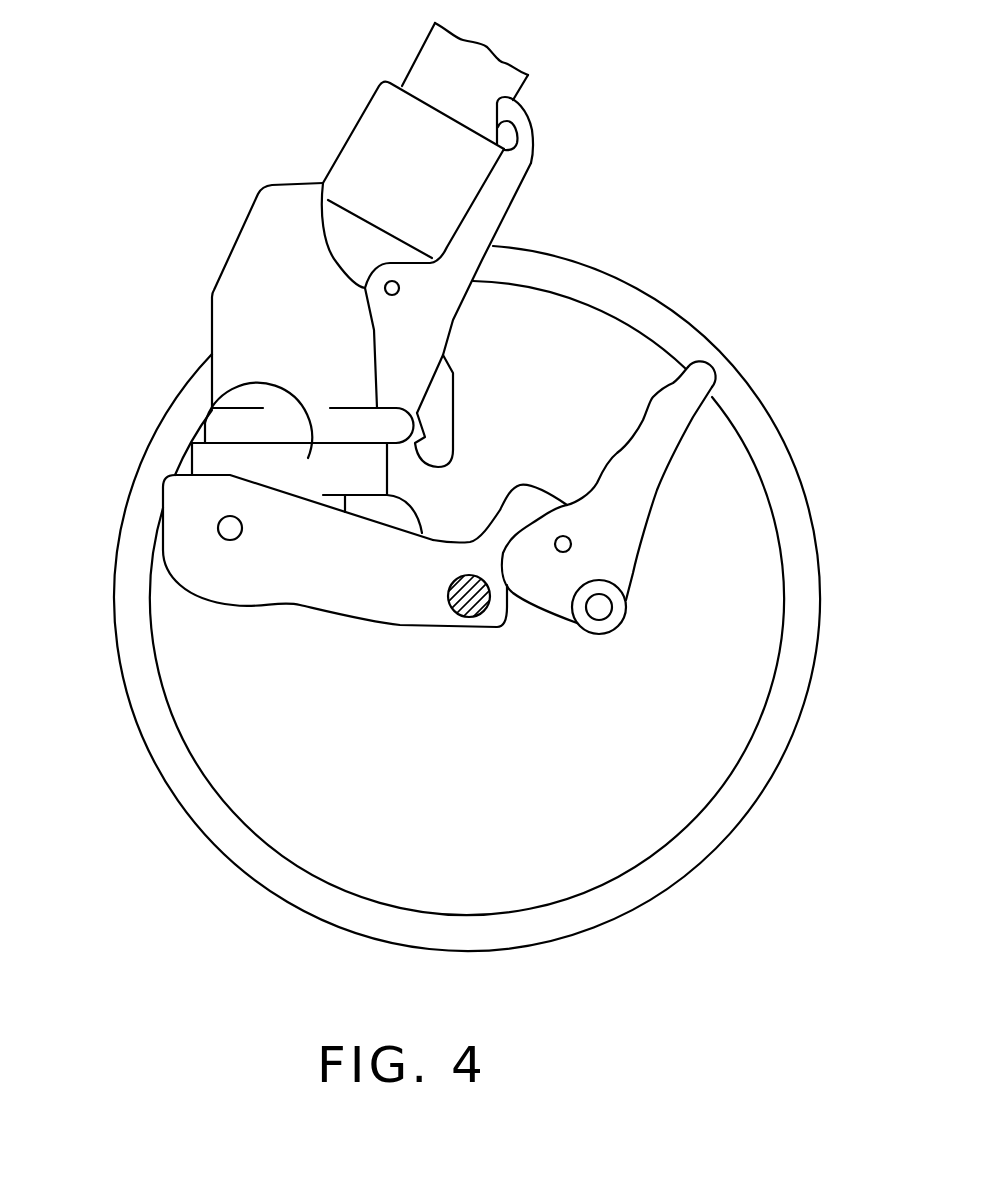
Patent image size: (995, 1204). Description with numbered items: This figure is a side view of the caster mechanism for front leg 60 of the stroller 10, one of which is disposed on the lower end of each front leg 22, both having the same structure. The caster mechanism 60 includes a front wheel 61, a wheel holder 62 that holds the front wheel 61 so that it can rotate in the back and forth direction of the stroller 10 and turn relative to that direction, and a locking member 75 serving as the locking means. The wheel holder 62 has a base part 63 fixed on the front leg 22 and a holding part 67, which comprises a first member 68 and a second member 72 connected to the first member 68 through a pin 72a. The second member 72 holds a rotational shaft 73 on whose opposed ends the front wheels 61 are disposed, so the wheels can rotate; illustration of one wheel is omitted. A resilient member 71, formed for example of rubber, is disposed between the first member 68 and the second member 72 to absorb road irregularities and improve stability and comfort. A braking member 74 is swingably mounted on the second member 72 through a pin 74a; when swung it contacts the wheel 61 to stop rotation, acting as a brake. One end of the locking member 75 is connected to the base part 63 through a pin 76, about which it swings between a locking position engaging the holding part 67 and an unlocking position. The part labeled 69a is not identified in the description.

The stroller 10 is at (750, 185).
The front leg 22 is at (425, 65).
The caster mechanism for front leg 60 is at (263, 140).
The front wheel 61 is at (274, 874).
The wheel holder 62 is at (232, 217).
The base part 63 is at (242, 277).
The holding part 67 is at (428, 513).
The first member 68 is at (237, 394).
The guide block 69a is at (223, 458).
The resilient member 71 is at (372, 512).
The second member 72 is at (261, 601).
The pin 72a is at (228, 528).
The rotational shaft 73 is at (477, 617).
The braking member 74 is at (623, 534).
The pin 74a is at (570, 542).
The locking member 75 is at (457, 407).
The pin 76 is at (388, 295).